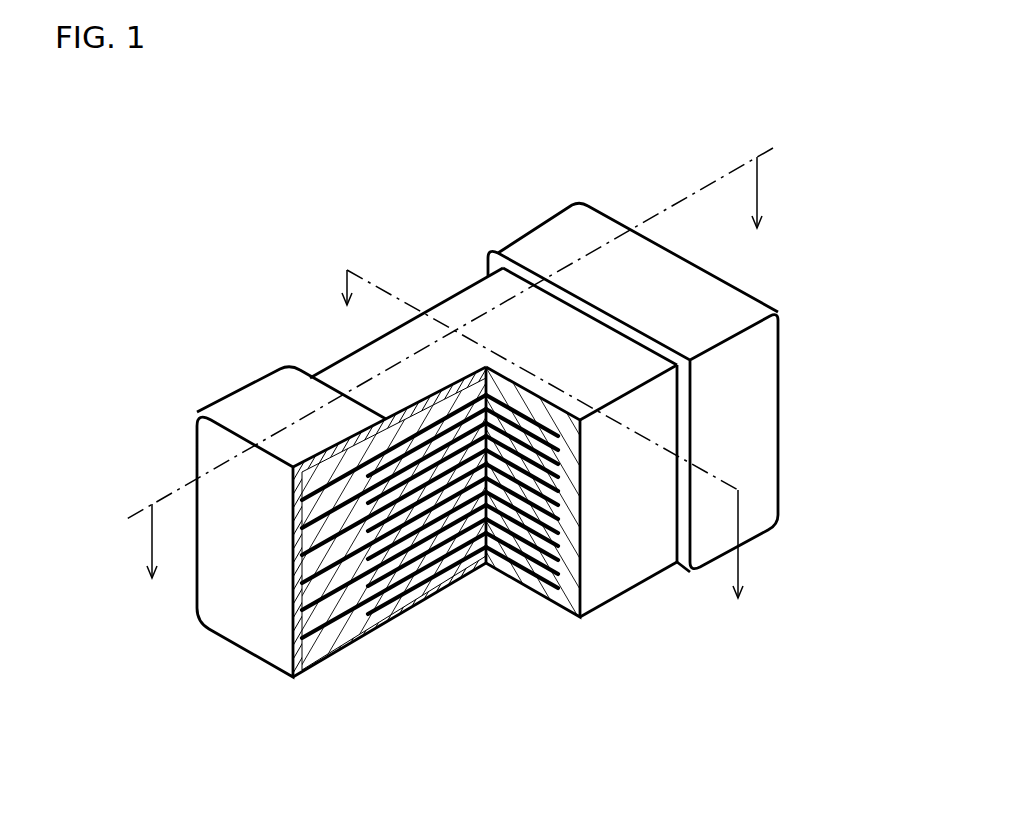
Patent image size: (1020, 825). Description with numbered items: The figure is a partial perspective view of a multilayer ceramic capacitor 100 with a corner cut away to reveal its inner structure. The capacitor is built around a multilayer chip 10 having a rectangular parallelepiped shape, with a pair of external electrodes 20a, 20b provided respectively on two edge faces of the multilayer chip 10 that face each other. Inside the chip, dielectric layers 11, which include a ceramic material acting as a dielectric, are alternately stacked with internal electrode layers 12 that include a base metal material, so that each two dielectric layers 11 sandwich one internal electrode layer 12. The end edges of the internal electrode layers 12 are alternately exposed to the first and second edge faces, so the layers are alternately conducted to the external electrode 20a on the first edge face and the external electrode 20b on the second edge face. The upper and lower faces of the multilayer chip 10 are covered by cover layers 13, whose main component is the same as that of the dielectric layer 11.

The multilayer ceramic capacitor 100 is at (880, 132).
The multilayer chip 10 is at (334, 362).
The dielectric layer 11 is at (410, 572).
The internal electrode layer 12 is at (387, 615).
The cover layer 13 is at (457, 307).
The external electrode 20a is at (225, 400).
The external electrode 20b is at (542, 240).